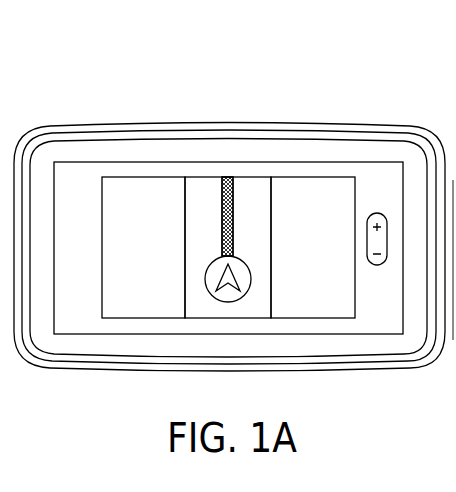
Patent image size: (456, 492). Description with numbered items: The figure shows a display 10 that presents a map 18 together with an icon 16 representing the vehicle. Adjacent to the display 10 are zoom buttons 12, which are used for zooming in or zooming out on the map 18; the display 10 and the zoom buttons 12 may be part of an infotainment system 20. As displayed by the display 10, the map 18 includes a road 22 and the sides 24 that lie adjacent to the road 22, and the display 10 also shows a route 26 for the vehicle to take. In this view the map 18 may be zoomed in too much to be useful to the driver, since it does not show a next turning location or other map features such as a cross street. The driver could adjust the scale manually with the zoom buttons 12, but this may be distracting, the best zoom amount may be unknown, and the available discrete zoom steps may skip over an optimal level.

The infotainment system 20 is at (89, 106).
The display 10 is at (229, 178).
The zoom buttons 12 is at (373, 213).
The map 18 is at (120, 217).
The icon 16 is at (206, 275).
The route 26 is at (233, 220).
The road 22 is at (262, 292).
The sides 24 is at (335, 300).